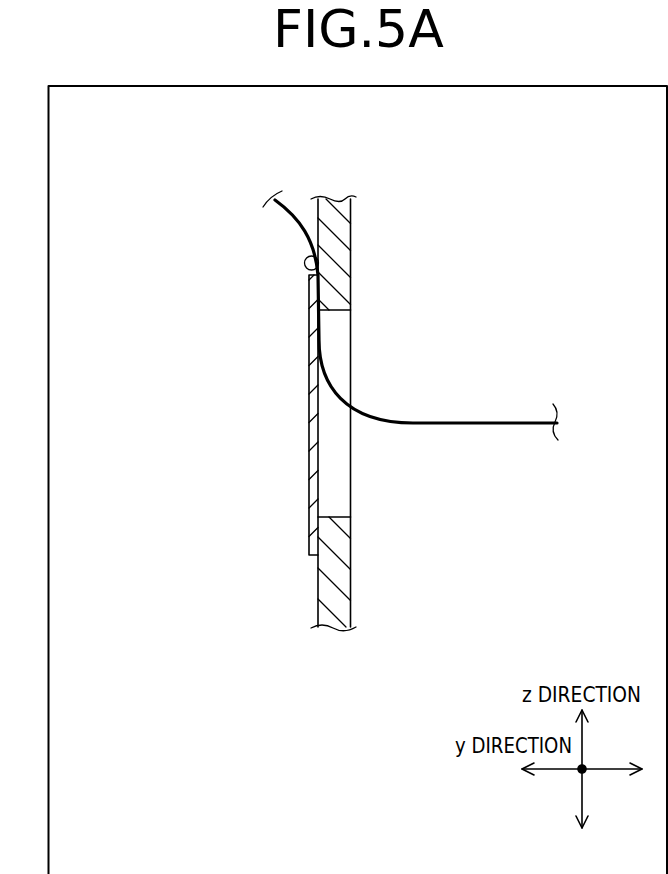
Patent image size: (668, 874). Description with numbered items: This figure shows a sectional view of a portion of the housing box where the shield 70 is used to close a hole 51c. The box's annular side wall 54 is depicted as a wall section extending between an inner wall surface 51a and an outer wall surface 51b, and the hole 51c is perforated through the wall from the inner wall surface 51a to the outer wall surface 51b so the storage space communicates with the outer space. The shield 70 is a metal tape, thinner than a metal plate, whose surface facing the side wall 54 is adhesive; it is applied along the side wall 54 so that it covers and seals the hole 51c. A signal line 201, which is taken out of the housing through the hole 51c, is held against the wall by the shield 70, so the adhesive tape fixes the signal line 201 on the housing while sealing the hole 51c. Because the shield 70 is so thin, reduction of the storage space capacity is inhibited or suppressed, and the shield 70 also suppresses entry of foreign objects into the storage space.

The side wall 54 is at (352, 206).
The inner wall surface 51a is at (319, 277).
The outer wall surface 51b is at (352, 237).
The hole 51c is at (340, 505).
The shield 70 is at (303, 448).
The signal line 201 is at (517, 423).